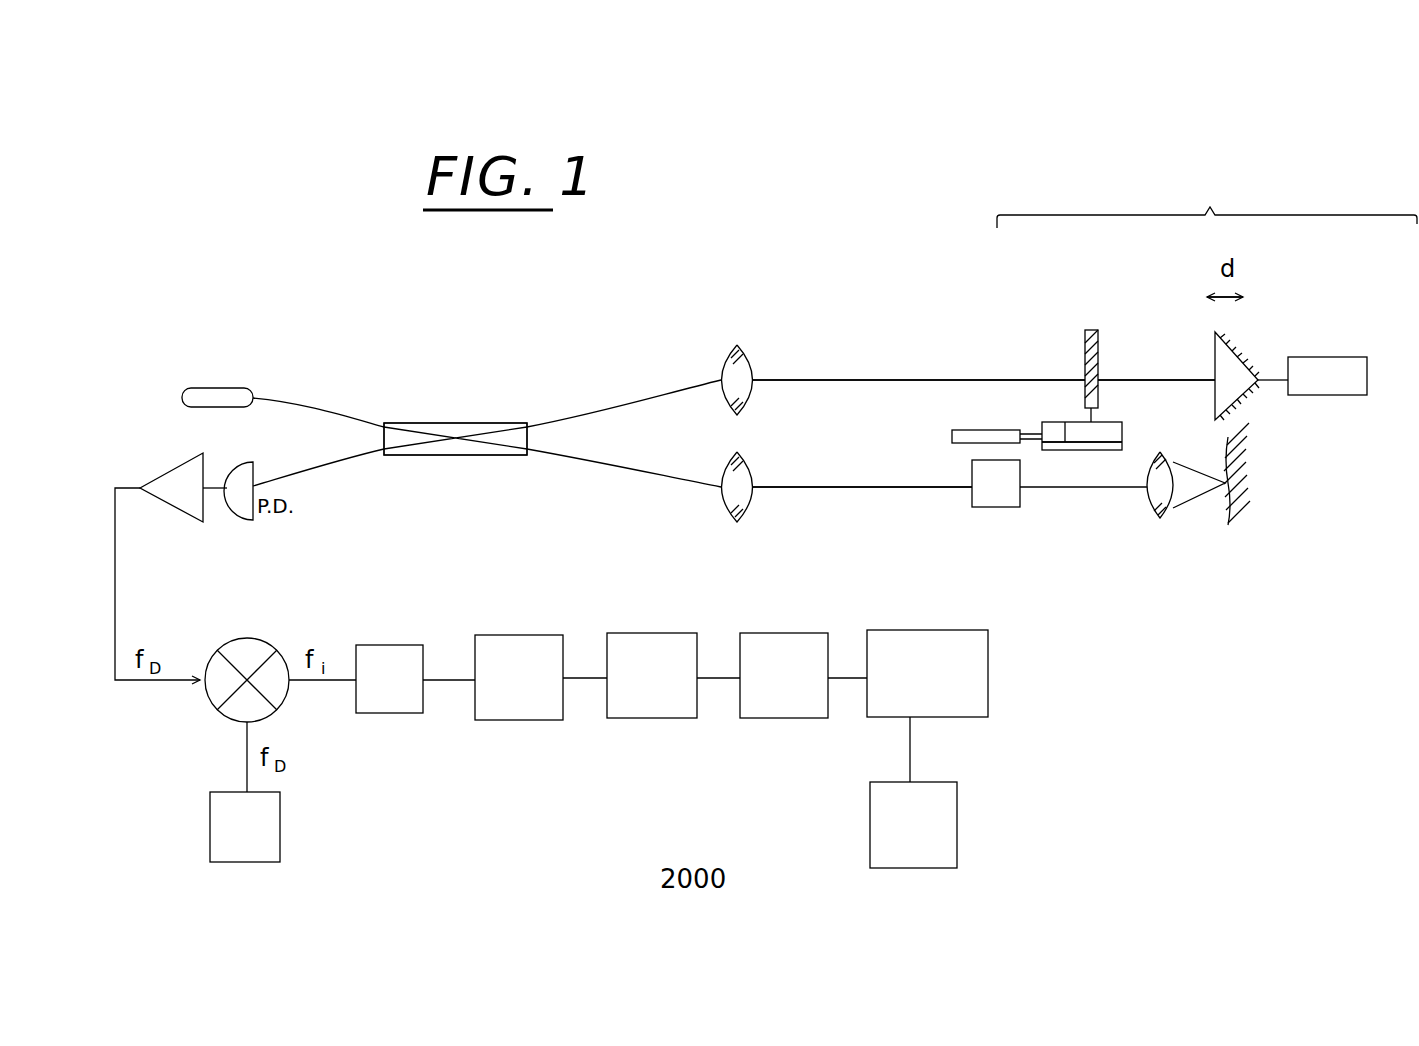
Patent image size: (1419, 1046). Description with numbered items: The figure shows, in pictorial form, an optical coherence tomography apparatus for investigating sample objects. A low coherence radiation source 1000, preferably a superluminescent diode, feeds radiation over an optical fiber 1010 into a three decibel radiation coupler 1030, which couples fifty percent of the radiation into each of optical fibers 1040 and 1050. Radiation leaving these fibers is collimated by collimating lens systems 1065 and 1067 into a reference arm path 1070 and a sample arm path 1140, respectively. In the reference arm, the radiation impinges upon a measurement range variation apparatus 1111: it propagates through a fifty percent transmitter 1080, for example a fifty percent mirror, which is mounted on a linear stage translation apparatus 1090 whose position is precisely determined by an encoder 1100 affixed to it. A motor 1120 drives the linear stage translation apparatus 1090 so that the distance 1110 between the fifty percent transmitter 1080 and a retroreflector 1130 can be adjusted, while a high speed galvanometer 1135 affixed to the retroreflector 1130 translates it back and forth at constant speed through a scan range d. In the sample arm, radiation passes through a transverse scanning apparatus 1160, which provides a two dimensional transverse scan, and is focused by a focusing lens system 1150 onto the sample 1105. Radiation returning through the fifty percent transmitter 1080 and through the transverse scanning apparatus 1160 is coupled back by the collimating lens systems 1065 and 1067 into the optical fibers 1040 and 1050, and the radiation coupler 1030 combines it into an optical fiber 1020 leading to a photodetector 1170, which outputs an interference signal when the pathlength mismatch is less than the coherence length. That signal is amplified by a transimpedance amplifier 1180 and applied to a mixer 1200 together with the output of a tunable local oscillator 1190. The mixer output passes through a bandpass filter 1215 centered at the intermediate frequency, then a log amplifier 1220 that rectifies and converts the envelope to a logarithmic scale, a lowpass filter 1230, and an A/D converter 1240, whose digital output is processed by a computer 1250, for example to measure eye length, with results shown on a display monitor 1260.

The low coherence radiation source 1000 is at (176, 377).
The optical fiber 1010 is at (316, 416).
The optical fiber 1020 is at (320, 466).
The 3 dB radiation coupler 1030 is at (461, 419).
The optical fiber 1040 is at (621, 412).
The optical fiber 1050 is at (634, 459).
The collimating lens system 1065 is at (750, 361).
The collimating lens system 1067 is at (756, 499).
The reference arm path 1070 is at (864, 378).
The 50% transmitter 1080 is at (1077, 359).
The linear stage translation apparatus 1090 is at (1062, 419).
The encoder 1100 is at (1126, 447).
The sample 1105 is at (1243, 518).
The distance 1110 is at (1147, 378).
The measurement range variation apparatus 1111 is at (1207, 199).
The motor 1120 is at (950, 438).
The retroreflector 1130 is at (1241, 352).
The high speed galvanometer 1135 is at (1344, 352).
The sample arm path 1140 is at (864, 490).
The focusing lens system 1150 is at (1145, 489).
The transverse scanning apparatus 1160 is at (1003, 509).
The photodetector 1170 is at (240, 524).
The transimpedance amplifier 1180 is at (158, 504).
The tunable local oscillator 1190 is at (284, 843).
The mixer 1200 is at (217, 723).
The bandpass filter 1215 is at (402, 716).
The log amplifier 1220 is at (531, 723).
The lowpass filter 1230 is at (667, 723).
The A/D converter 1240 is at (799, 723).
The computer 1250 is at (998, 680).
The display monitor 1260 is at (966, 822).